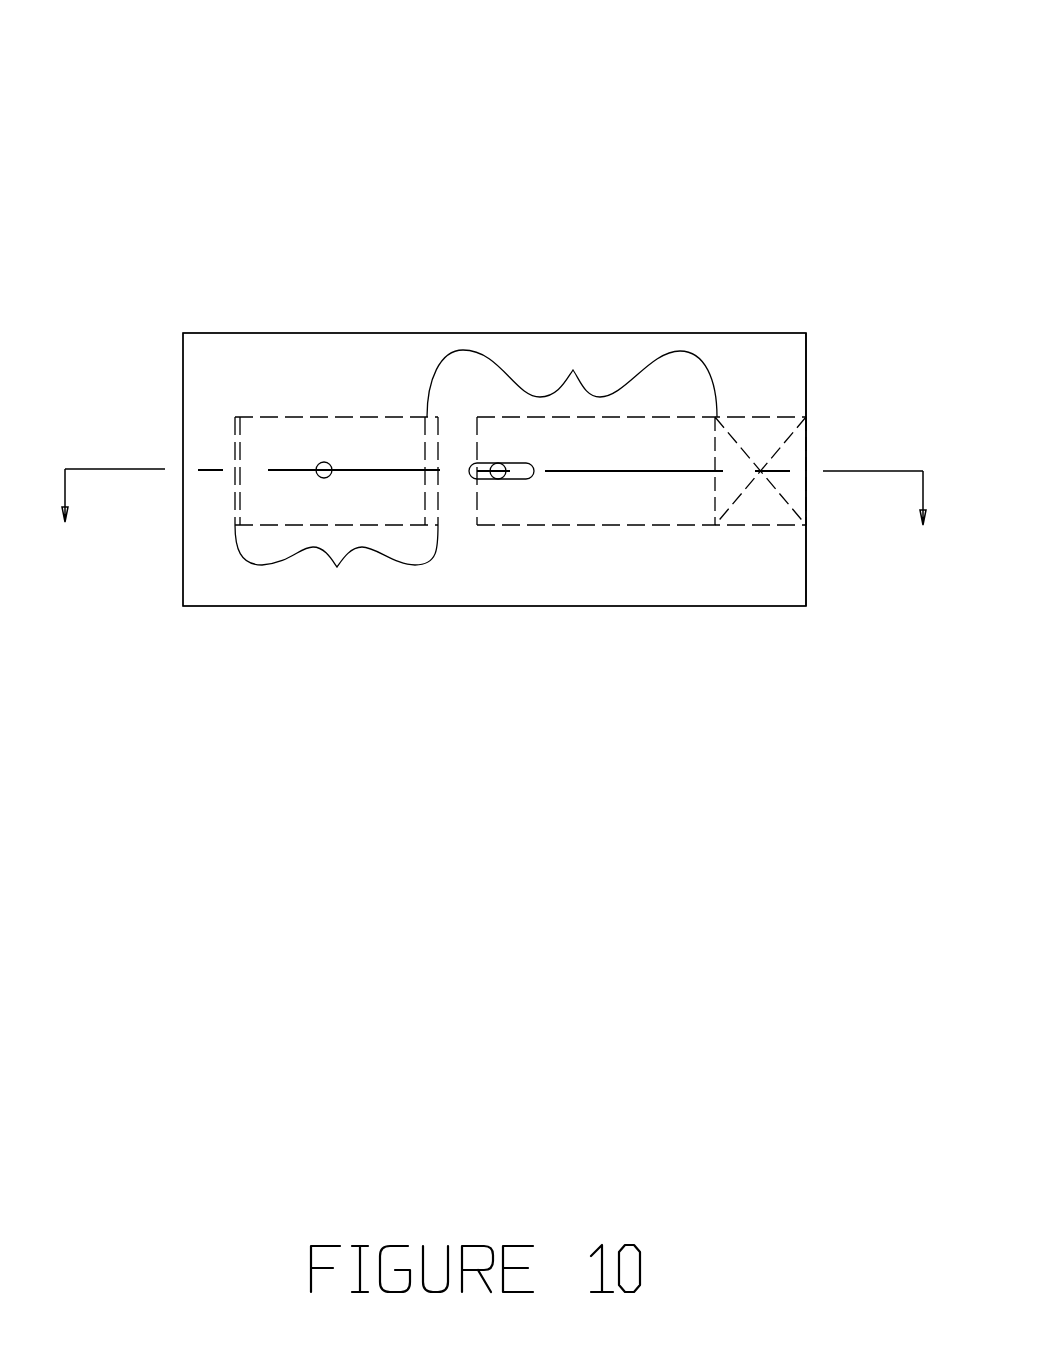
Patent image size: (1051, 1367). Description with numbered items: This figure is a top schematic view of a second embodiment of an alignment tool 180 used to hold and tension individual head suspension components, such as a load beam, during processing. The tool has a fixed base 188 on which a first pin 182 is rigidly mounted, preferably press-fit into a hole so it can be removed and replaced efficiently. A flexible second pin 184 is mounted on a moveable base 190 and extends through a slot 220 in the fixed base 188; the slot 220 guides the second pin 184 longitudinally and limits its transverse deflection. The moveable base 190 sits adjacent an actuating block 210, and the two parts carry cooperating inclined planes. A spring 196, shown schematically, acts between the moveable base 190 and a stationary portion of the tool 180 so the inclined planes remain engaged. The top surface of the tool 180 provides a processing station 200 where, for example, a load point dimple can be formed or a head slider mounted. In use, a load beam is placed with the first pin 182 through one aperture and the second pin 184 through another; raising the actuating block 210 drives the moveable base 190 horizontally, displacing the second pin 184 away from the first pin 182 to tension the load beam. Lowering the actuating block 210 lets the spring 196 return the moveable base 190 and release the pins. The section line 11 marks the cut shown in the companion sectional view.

The alignment tool 180 is at (525, 88).
The first pin 182 is at (327, 462).
The second pin 184 is at (500, 479).
The fixed base 188 is at (255, 350).
The moveable base 190 is at (575, 368).
The spring 196 is at (762, 478).
The processing station 200 is at (781, 347).
The actuating block 210 is at (337, 568).
The slot 220 is at (525, 479).
The section line 11- 11 is at (493, 516).